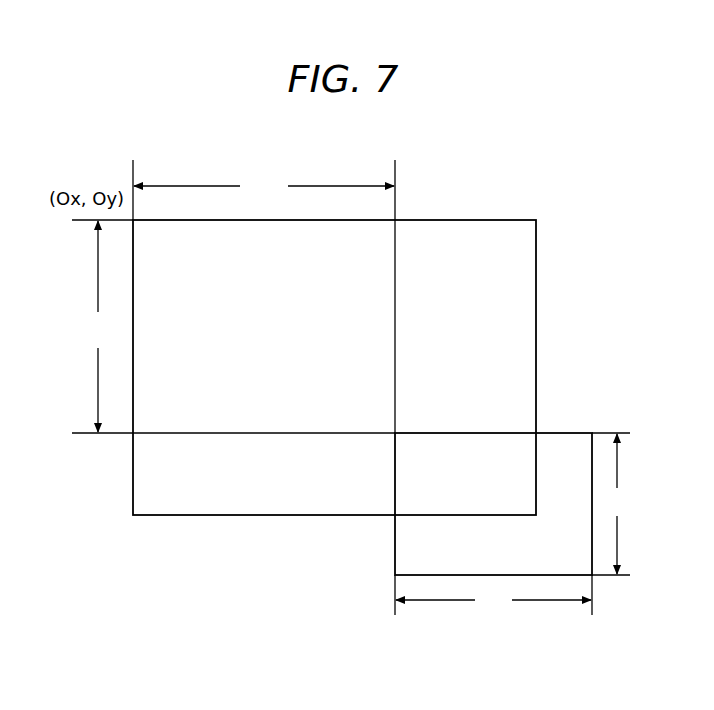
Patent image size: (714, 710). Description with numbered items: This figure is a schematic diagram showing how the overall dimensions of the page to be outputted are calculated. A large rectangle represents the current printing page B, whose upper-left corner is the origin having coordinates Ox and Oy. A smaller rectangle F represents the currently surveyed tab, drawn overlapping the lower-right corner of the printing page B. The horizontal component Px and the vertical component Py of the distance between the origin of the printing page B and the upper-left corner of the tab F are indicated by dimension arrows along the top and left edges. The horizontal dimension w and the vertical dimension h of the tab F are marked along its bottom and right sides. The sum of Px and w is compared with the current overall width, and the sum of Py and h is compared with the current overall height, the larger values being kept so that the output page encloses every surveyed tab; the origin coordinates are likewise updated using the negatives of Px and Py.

The current printing page B is at (480, 230).
The foreground image region F is at (553, 447).
The horizontal component of the distance Px is at (264, 186).
The vertical component of the distance Py is at (98, 326).
The horizontal dimension of the tab w is at (493, 599).
The vertical dimension of the tab h is at (616, 504).